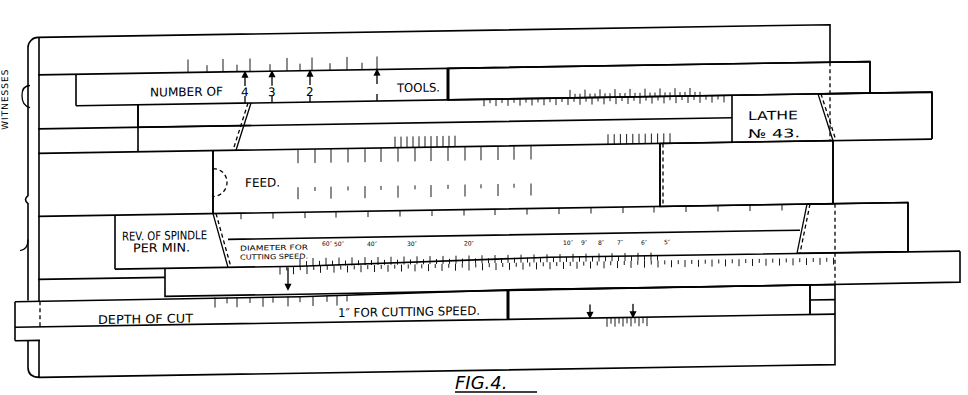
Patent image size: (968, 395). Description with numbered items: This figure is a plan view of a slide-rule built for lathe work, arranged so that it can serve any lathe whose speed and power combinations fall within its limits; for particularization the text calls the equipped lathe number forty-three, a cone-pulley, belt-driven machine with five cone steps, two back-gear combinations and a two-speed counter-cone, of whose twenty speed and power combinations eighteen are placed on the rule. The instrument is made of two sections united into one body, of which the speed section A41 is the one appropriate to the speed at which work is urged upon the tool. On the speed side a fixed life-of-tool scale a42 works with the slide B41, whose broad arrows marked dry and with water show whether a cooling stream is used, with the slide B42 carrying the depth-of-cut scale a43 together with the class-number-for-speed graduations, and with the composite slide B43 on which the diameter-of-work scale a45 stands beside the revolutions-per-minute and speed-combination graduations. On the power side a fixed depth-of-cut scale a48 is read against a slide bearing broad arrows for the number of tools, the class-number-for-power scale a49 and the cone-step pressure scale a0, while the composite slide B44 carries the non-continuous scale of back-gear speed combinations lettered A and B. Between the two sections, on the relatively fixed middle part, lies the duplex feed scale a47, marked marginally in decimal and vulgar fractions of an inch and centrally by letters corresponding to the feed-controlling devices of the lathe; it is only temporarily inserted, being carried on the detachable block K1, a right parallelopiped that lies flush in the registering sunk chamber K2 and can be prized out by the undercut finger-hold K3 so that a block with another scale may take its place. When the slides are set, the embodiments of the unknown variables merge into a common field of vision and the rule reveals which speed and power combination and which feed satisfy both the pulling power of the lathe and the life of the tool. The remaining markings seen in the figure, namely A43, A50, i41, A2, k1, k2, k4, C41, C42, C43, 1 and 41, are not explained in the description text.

The frame body A43 is at (800, 66).
The depth of cut for power slide A50 is at (785, 30).
The depth-of-cut scale a48 is at (373, 68).
The index marks i41 is at (598, 74).
The composite slide B43 is at (798, 96).
The class number for power scale a49 is at (640, 82).
The frame section A2 is at (190, 128).
The cone-step diameter scale a0 is at (590, 124).
The depth of cut scale a43 is at (468, 134).
The key k2 is at (822, 152).
The composite slide B44 is at (908, 141).
The key k1 is at (862, 127).
The connecting strip C41 is at (873, 106).
The sunk chamber K2 is at (204, 163).
The detachable block K1 is at (260, 178).
The finger-hold K3 is at (213, 181).
The duplex feed scale a47 is at (560, 172).
The diameter of work scale a45 is at (520, 229).
The slide B42 is at (950, 292).
The connecting strip C42 is at (917, 260).
The key k4 is at (830, 264).
The slide B41 is at (765, 324).
The index 1 is at (587, 322).
The connecting strip C43 is at (835, 302).
The life of tool scale a42 is at (645, 338).
The speed section A41 is at (18, 97).
The frame 41 is at (15, 240).